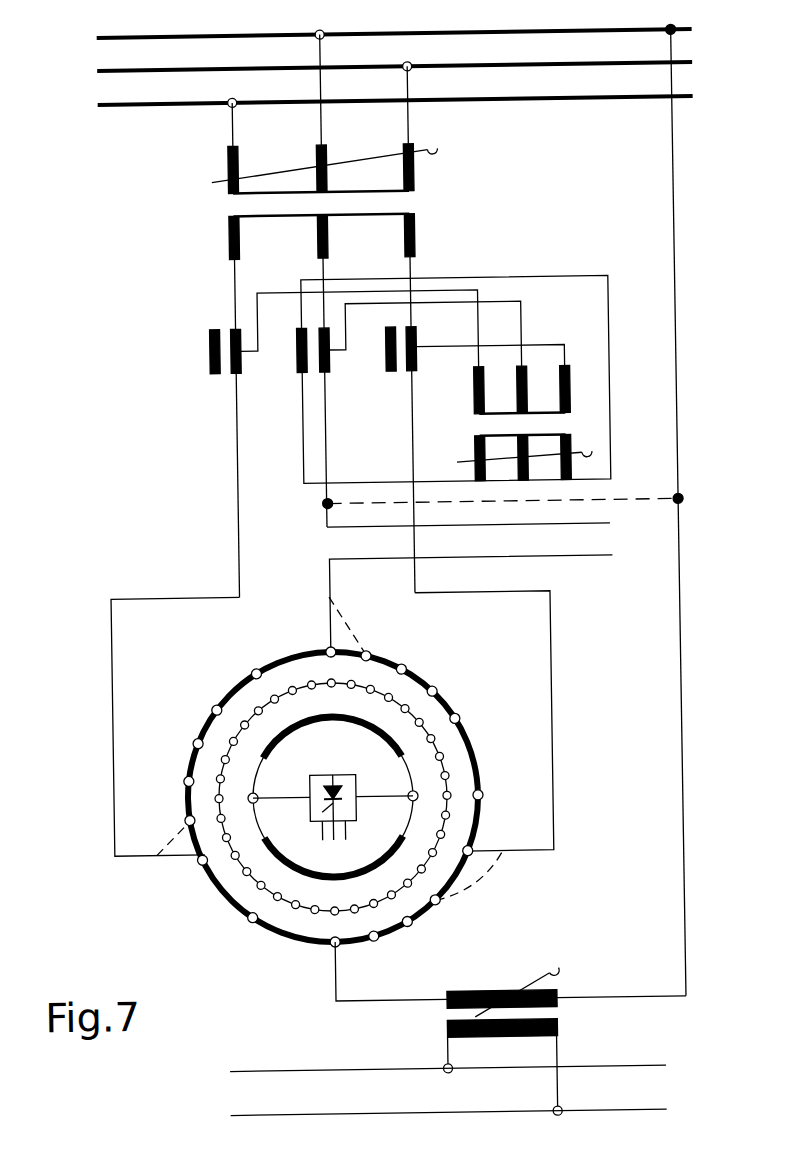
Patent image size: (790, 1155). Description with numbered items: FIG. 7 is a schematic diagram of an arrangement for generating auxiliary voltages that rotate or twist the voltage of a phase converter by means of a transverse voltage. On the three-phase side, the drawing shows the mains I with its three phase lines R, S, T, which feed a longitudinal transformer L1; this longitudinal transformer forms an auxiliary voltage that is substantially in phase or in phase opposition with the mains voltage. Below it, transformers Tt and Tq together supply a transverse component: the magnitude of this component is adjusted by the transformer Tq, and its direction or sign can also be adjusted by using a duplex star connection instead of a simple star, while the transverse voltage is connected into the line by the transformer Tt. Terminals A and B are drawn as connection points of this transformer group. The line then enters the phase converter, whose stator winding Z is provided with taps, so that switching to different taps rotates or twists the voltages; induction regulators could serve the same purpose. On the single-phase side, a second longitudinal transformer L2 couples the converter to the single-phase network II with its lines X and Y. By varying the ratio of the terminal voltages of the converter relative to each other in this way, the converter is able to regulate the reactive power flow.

The three-phase supply network I is at (39, 70).
The supply phase line R is at (376, 34).
The supply phase line S is at (377, 67).
The supply phase line T is at (377, 101).
The longitudinal transformer on the three-phase side L1 is at (311, 201).
The transverse-voltage transformer Tt is at (390, 380).
The transverse transformer Tq is at (511, 423).
The terminal A is at (503, 520).
The terminal B is at (483, 596).
The stator winding Z is at (474, 750).
The longitudinal transformer on the single-phase side L2 is at (526, 1008).
The second network II is at (163, 1089).
The network line X is at (428, 1065).
The network line Y is at (427, 1110).